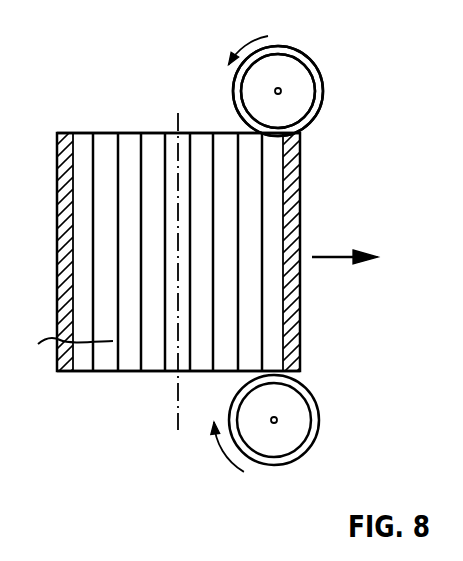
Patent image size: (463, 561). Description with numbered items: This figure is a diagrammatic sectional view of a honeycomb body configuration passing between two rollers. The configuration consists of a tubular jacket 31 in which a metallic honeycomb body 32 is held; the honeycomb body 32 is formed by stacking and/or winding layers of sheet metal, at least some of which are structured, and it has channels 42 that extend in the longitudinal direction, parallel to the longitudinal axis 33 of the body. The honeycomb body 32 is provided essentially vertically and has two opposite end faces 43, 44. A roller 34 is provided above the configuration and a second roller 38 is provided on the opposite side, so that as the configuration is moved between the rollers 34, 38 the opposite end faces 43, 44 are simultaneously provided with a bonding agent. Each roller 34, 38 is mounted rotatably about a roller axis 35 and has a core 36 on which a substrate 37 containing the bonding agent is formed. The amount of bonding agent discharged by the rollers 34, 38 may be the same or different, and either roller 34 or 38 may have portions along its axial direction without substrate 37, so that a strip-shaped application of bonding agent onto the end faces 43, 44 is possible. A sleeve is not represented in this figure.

The tubular jacket 31 is at (60, 318).
The honeycomb body 32 is at (38, 344).
The longitudinal axis 33 is at (174, 410).
The roller 34 is at (341, 79).
The roller axis 35 is at (279, 88).
The core 36 is at (304, 78).
The substrate 37 is at (320, 100).
The roller 38 is at (255, 477).
The channels 42 is at (171, 133).
The end face 43 is at (100, 132).
The end face 44 is at (100, 375).